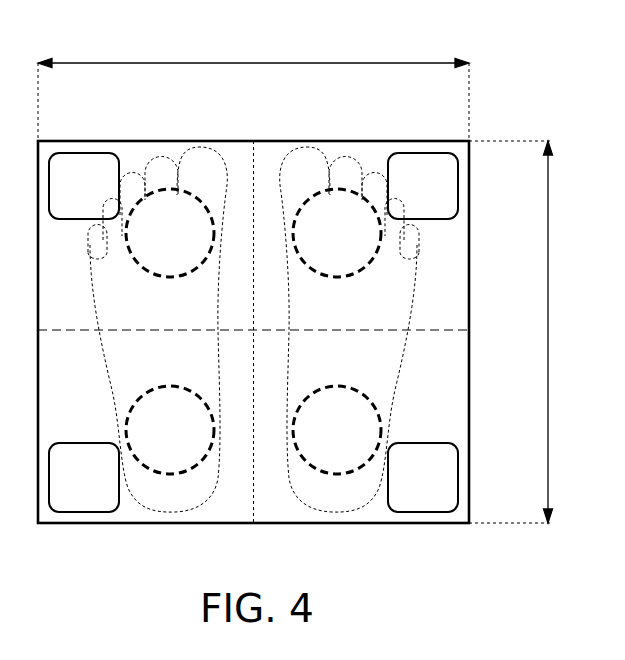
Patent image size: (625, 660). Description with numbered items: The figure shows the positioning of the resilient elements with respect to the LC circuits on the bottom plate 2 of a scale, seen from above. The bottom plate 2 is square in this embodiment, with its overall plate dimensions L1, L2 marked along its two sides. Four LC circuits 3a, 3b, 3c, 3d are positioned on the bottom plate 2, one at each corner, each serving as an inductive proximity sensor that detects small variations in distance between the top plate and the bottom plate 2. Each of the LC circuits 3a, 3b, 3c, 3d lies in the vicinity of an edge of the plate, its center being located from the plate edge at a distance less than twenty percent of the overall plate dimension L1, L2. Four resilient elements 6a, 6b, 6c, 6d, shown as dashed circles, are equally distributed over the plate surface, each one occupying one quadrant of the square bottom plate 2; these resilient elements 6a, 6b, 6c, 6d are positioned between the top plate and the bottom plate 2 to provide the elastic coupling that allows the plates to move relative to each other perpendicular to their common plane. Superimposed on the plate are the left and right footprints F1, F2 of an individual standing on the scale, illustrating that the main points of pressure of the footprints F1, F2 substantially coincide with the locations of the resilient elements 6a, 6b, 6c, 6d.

The bottom plate 2 is at (283, 523).
The LC circuit 3a is at (431, 512).
The LC circuit 3b is at (78, 512).
The LC circuit 3c is at (78, 153).
The LC circuit 3d is at (431, 153).
The resilient element 6a is at (348, 475).
The resilient element 6b is at (160, 475).
The resilient element 6c is at (160, 190).
The resilient element 6d is at (347, 190).
The left footprint F1 is at (112, 373).
The right footprint F2 is at (396, 373).
The overall plate dimension L1 is at (253, 89).
The overall plate dimension L2 is at (524, 332).